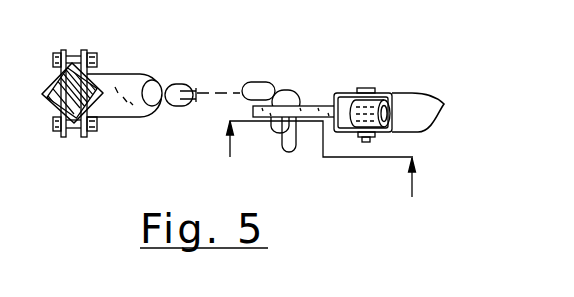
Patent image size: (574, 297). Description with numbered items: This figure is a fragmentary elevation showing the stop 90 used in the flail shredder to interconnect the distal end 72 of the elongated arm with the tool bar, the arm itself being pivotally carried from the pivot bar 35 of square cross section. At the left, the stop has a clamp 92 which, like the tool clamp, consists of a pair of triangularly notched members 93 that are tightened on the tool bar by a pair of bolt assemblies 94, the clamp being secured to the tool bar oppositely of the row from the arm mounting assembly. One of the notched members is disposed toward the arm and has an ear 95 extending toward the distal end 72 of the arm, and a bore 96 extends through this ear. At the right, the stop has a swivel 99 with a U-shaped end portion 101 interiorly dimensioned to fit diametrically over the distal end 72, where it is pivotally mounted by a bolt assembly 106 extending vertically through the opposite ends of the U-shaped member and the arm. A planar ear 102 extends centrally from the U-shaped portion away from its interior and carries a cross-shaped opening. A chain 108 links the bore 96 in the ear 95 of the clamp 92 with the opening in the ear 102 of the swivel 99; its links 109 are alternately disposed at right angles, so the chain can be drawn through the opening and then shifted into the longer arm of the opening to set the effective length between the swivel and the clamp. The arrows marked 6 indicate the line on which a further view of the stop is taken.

The section line 6- 6 is at (321, 170).
The pivot bar 35 is at (63, 99).
The distal end of the arm 72 is at (392, 112).
The stop 90 is at (160, 162).
The clamp 92 is at (74, 140).
The triangularly notched members 93 is at (84, 50).
The bolt assemblies 94 is at (98, 58).
The ear 95 is at (131, 116).
The bore 96 is at (149, 80).
The swivel 99 is at (383, 92).
The U-shaped end portion 101 is at (444, 104).
The planar ear 102 is at (312, 104).
The bolt assembly 106 is at (369, 87).
The chain 108 is at (257, 77).
The links 109 is at (293, 137).